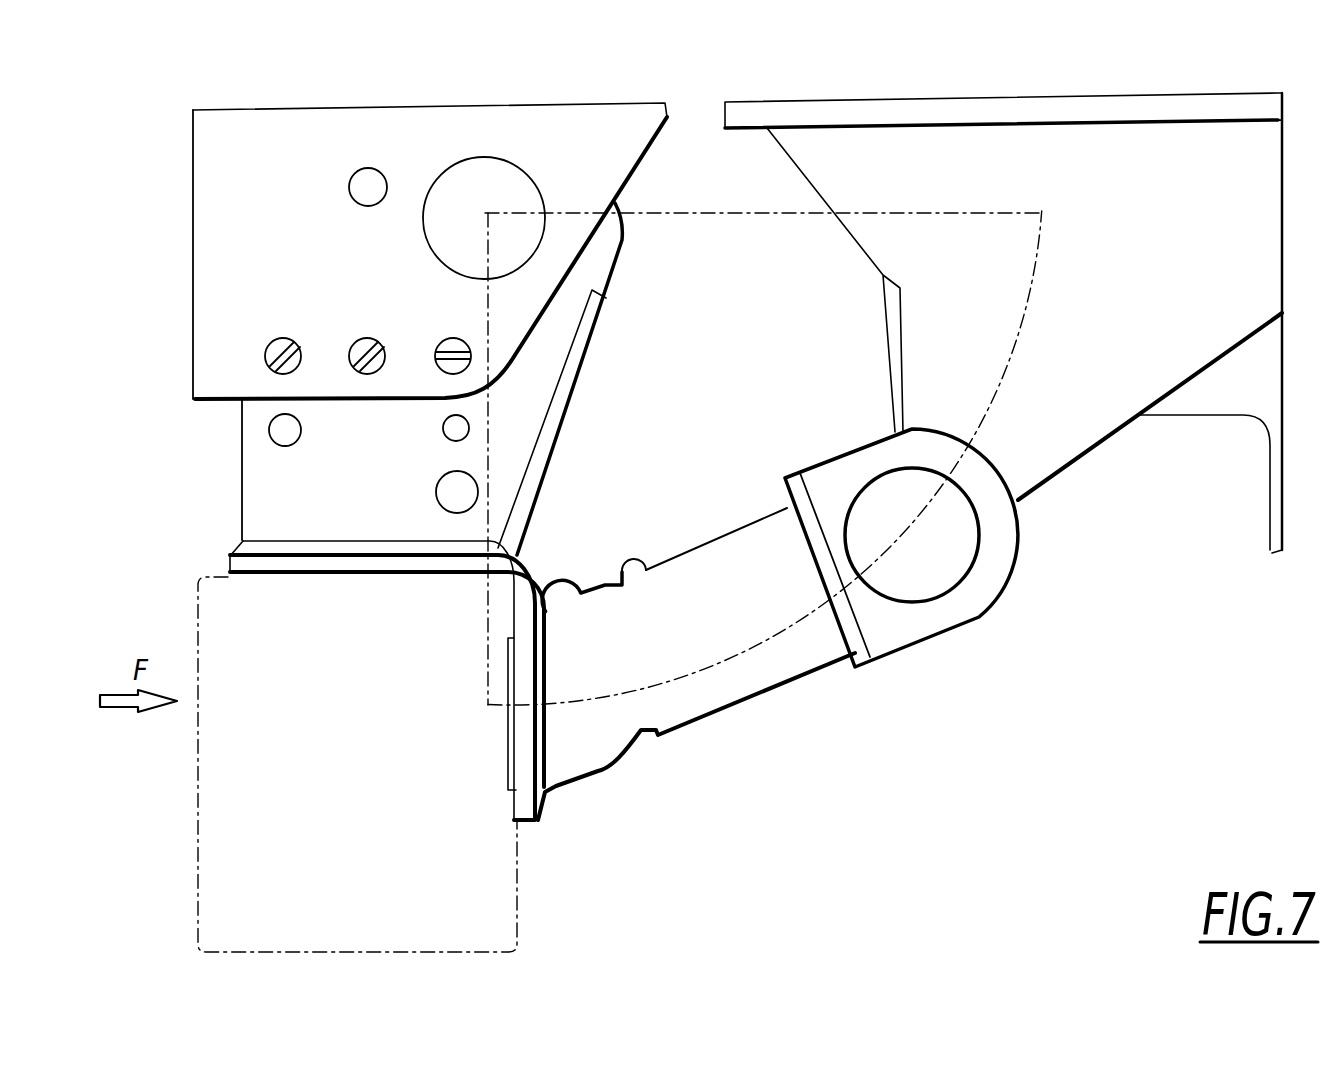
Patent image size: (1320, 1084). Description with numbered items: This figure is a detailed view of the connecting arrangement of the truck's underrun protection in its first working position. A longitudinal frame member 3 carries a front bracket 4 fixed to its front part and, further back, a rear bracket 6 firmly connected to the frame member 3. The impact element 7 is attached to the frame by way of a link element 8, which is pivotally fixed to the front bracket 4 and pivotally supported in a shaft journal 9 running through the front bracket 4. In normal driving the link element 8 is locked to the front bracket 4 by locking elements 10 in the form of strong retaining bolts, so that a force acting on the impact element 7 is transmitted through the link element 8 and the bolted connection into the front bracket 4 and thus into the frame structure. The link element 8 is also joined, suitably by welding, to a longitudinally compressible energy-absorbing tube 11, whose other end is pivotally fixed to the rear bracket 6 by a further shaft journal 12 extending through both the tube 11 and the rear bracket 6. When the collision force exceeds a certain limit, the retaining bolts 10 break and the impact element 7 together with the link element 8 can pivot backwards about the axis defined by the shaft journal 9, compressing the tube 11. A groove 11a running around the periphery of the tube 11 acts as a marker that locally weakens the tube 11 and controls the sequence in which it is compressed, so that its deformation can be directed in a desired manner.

The frame member 3 is at (1241, 108).
The front bracket 4 is at (120, 309).
The rear bracket 6 is at (1060, 443).
The impact element 7 is at (253, 780).
The link element 8 is at (252, 472).
The shaft journal 9 is at (478, 185).
The locking element 10 is at (264, 352).
The energy-absorbing tube 11 is at (797, 658).
The groove 11a is at (650, 568).
The further shaft journal 12 is at (928, 568).